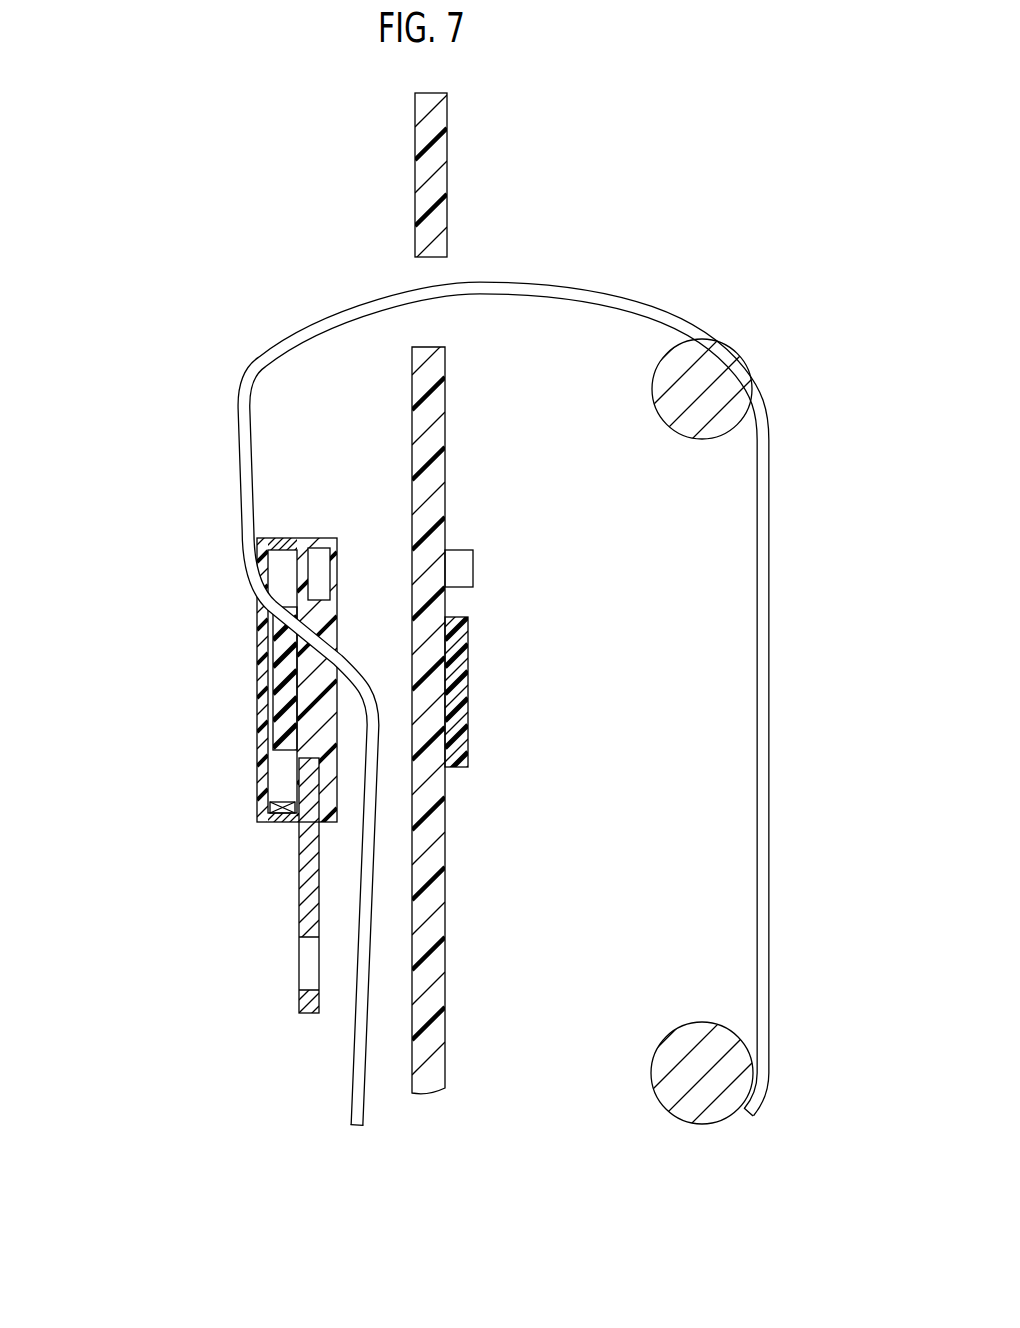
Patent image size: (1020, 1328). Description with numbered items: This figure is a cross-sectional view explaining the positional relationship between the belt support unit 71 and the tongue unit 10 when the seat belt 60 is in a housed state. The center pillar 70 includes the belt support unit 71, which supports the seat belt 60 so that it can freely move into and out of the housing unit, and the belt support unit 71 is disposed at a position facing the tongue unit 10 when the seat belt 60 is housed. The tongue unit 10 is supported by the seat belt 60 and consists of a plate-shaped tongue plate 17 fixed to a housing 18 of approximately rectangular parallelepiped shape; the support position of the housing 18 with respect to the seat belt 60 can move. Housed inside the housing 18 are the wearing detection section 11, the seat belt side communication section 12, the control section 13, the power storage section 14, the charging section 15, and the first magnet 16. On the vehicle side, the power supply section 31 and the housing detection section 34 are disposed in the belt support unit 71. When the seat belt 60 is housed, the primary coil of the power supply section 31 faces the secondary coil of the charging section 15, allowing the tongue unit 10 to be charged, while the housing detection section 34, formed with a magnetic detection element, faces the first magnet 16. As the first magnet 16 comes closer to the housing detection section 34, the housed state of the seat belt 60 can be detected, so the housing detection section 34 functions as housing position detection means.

The tongue unit 10 is at (128, 515).
The wearing detection section 11 is at (267, 797).
The seat belt side communication section 12 is at (273, 633).
The control section 13 is at (218, 613).
The power storage section 14 is at (218, 647).
The charging section 15 is at (218, 682).
The first magnet 16 is at (320, 553).
The tongue plate 17 is at (300, 884).
The housing 18 is at (263, 737).
The power supply section 31 is at (468, 680).
The housing detection section 34 is at (473, 568).
The seat belt 60 is at (239, 432).
The center pillar 70 is at (420, 176).
The belt support unit 71 is at (402, 1083).